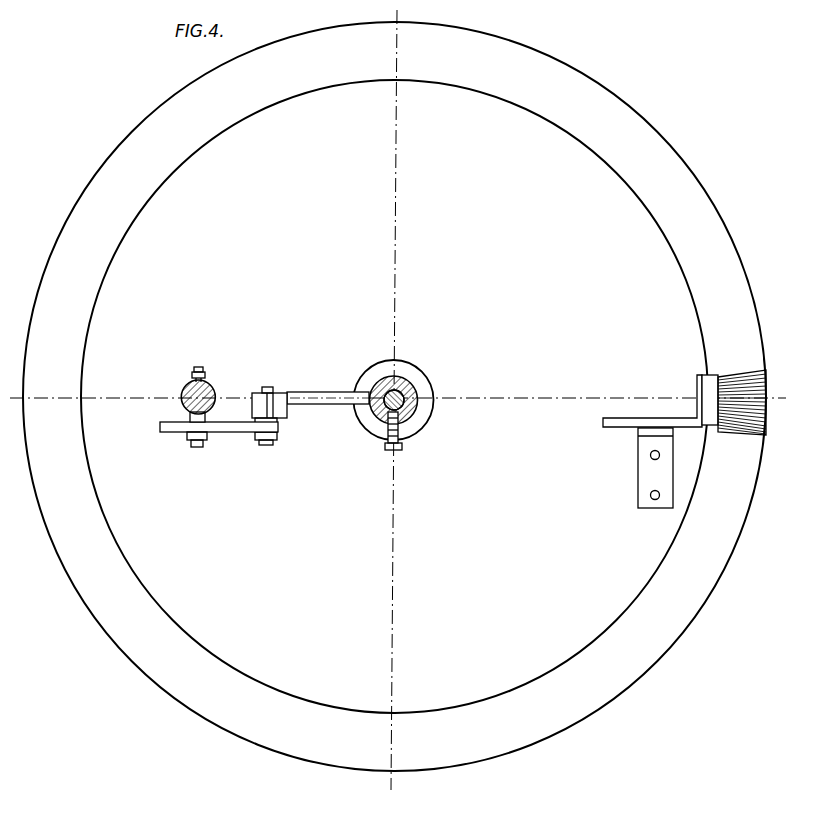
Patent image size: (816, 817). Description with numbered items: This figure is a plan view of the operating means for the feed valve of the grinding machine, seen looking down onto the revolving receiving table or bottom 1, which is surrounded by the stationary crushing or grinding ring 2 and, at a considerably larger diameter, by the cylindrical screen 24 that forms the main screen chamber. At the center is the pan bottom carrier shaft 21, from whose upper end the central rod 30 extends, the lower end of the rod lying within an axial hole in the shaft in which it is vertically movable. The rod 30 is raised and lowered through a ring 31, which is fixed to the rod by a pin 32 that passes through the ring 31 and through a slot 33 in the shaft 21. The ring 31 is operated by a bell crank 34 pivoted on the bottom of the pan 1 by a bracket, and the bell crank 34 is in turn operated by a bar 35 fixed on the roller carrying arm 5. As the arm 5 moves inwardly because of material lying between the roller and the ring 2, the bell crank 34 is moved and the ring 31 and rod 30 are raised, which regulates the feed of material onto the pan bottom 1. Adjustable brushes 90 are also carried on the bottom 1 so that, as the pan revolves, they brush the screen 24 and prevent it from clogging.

The revolving receiving table or bottom 1 is at (413, 552).
The crushing or grinding ring 2 is at (171, 174).
The cylindrical screen 24 is at (92, 176).
The roller carrying arm 5 is at (187, 386).
The pan bottom carrier shaft 21 is at (375, 412).
The central rod 30 is at (415, 386).
The ring 31 is at (425, 412).
The pin 32 is at (399, 433).
The slot 33 is at (202, 369).
The bell crank 34 is at (323, 393).
The bar 35 is at (226, 433).
The adjustable brushes 90 is at (745, 434).